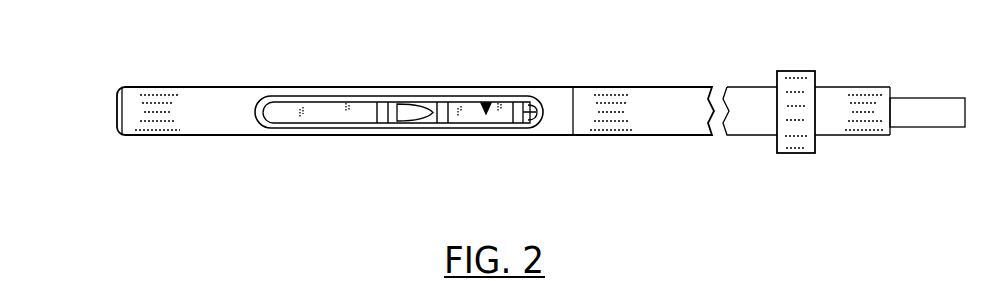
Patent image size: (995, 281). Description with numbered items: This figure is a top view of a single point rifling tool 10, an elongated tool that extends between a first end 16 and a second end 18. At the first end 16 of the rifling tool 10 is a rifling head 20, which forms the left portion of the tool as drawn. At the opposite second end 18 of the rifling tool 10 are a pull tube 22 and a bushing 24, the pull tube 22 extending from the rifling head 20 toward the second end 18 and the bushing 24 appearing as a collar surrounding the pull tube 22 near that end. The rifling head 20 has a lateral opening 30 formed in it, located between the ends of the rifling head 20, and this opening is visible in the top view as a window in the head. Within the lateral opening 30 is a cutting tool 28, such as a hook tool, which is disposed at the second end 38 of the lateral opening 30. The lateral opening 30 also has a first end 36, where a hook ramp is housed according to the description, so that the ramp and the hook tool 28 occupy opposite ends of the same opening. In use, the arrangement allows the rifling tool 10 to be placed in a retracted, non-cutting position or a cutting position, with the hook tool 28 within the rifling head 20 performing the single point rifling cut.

The single point rifling tool 10 is at (230, 167).
The first end 16 is at (117, 112).
The second end 18 is at (966, 106).
The rifling head 20 is at (223, 105).
The pull tube 22 is at (678, 100).
The bushing 24 is at (842, 125).
The cutting tool 28 is at (417, 100).
The lateral opening 30 is at (485, 100).
The first end of the lateral opening 36 is at (268, 110).
The second end of the lateral opening 38 is at (532, 130).